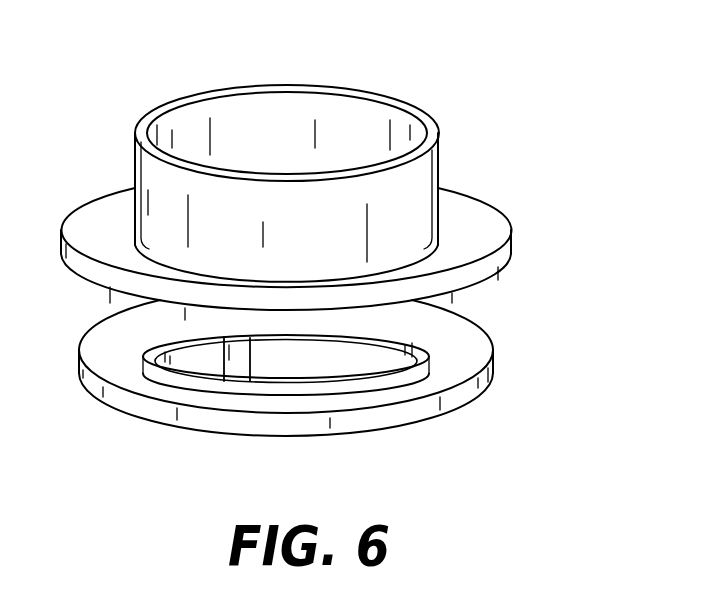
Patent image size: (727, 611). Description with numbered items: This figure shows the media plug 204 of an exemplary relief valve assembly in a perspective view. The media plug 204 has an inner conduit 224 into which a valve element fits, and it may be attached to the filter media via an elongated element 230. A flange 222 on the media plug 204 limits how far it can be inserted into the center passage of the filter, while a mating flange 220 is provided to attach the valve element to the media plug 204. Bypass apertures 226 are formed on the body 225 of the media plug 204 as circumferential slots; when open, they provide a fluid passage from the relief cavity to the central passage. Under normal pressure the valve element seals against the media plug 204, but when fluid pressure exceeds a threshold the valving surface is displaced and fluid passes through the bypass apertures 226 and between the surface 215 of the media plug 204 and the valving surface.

The media plug 204 is at (336, 259).
The surface 215 is at (157, 148).
The mating flange 220 is at (148, 380).
The flange 222 is at (509, 256).
The inner conduit 224 is at (297, 157).
The body 225 is at (240, 383).
The bypass apertures 226 is at (330, 364).
The elongated element 230 is at (434, 151).